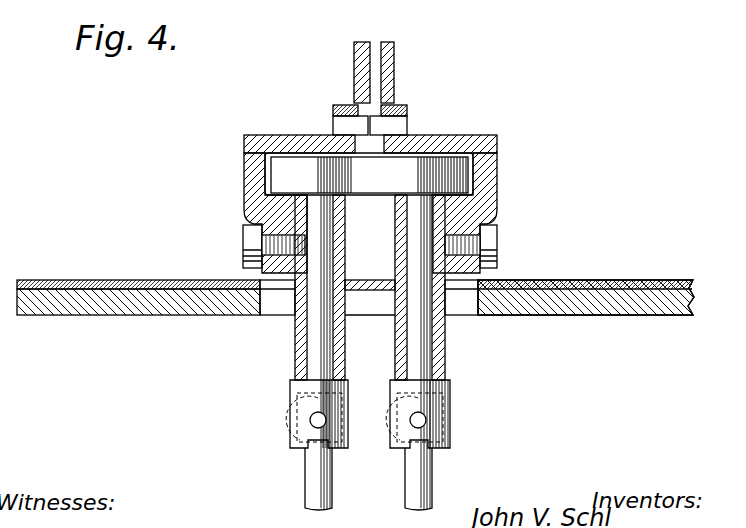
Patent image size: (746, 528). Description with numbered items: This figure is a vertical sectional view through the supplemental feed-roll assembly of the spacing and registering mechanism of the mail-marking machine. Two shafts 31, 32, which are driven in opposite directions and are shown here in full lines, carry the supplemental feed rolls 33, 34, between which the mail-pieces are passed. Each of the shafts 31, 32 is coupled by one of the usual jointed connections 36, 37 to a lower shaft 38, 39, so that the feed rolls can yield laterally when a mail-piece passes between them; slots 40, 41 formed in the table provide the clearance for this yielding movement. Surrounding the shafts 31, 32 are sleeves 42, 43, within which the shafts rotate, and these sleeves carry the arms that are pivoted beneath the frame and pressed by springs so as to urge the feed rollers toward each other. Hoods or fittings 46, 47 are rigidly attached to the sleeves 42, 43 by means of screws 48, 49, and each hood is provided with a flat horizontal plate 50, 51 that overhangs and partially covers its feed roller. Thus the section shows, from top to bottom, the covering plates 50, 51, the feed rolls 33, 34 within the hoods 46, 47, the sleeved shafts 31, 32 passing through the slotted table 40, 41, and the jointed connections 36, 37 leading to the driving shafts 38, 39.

The shaft 31 is at (317, 332).
The shaft 32 is at (417, 342).
The supplemental feed roll 33 is at (280, 159).
The supplemental feed roll 34 is at (447, 167).
The jointed connection 36 is at (310, 421).
The jointed connection 37 is at (426, 420).
The shaft 38 is at (310, 467).
The shaft 39 is at (423, 473).
The slot 40 is at (278, 302).
The slot 41 is at (465, 308).
The sleeve 42 is at (295, 363).
The sleeve 43 is at (445, 370).
The hood 46 is at (247, 213).
The hood 47 is at (489, 212).
The screw 48 is at (250, 242).
The screw 49 is at (488, 248).
The flat horizontal plate 50 is at (306, 135).
The flat horizontal plate 51 is at (435, 133).